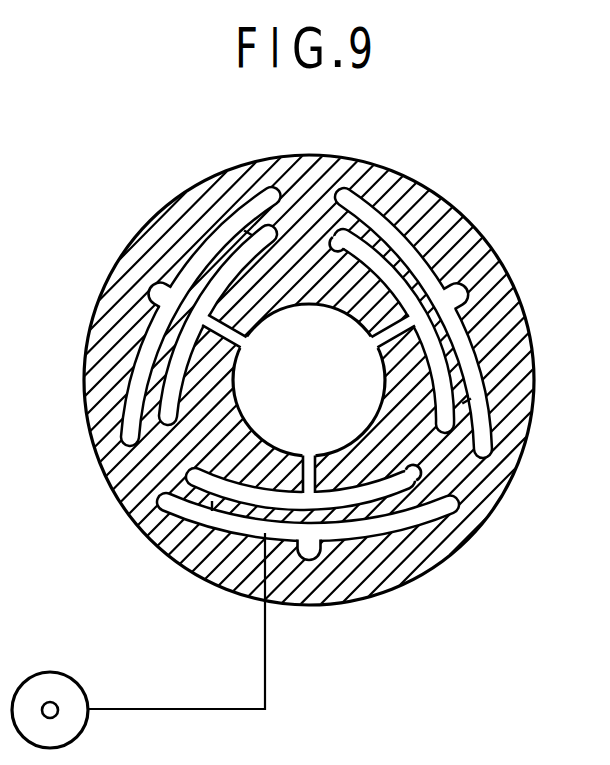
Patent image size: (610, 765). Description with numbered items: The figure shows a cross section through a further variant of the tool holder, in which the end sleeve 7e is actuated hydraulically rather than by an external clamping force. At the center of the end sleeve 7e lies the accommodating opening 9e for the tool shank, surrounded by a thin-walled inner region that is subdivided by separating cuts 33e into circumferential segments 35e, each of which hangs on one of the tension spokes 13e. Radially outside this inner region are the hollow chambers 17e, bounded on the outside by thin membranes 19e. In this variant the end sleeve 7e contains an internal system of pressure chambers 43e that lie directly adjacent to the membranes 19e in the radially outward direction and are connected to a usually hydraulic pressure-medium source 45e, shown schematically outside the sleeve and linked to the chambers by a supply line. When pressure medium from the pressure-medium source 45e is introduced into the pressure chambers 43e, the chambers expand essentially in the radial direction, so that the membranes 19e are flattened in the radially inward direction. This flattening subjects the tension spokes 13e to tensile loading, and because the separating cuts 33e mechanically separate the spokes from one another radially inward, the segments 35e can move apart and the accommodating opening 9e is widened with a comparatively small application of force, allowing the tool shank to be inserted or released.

The end sleeve 7e is at (100, 483).
The accommodating opening 9e is at (233, 372).
The tension spokes 13e is at (306, 233).
The hollow chambers 17e is at (253, 247).
The membranes 19e is at (197, 282).
The separating cuts 33e is at (463, 317).
The circumferential segments 35e is at (340, 250).
The pressure chambers 43e is at (400, 235).
The pressure-medium source 45e is at (53, 690).